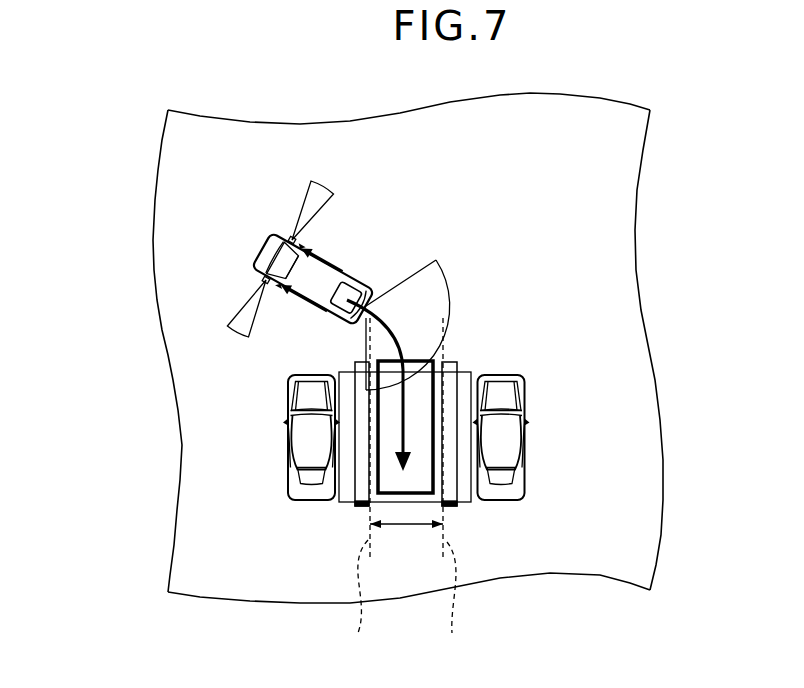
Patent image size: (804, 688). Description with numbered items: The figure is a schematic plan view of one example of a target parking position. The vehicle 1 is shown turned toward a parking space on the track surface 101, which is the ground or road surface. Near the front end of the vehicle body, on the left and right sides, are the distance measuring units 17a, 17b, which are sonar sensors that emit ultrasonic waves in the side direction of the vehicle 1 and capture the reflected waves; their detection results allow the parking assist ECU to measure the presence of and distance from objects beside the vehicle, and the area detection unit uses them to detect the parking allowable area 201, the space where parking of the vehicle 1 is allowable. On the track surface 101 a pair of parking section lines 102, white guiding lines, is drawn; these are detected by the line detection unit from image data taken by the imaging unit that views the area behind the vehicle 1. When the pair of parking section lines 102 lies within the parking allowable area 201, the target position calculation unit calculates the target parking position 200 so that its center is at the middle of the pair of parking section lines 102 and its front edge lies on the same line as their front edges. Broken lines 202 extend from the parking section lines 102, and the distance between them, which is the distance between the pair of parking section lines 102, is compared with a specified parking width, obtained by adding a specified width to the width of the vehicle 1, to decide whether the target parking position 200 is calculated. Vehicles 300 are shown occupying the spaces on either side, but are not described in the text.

The vehicle 1 is at (349, 258).
The distance measuring unit 17a is at (263, 281).
The distance measuring unit 17b is at (290, 238).
The track surface 101 is at (622, 208).
The parking section lines 102 is at (353, 362).
The target parking position 200 is at (393, 495).
The parking allowable area 201 is at (348, 505).
The broken lines 202 is at (405, 599).
The parked vehicle 300 is at (288, 392).